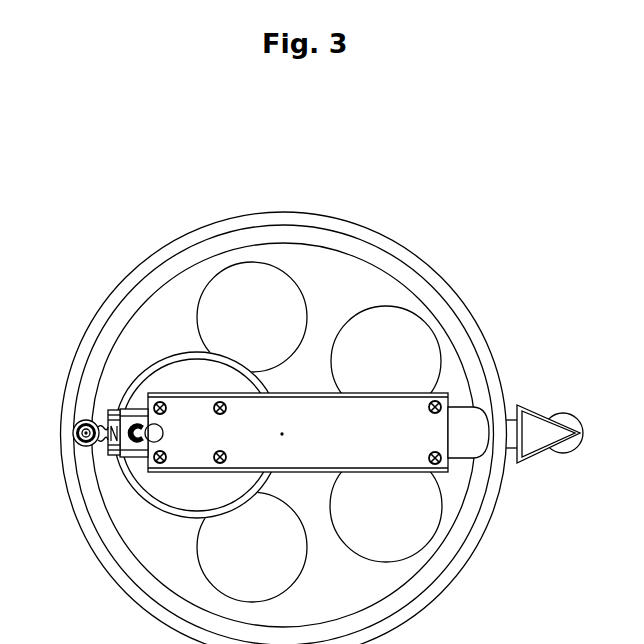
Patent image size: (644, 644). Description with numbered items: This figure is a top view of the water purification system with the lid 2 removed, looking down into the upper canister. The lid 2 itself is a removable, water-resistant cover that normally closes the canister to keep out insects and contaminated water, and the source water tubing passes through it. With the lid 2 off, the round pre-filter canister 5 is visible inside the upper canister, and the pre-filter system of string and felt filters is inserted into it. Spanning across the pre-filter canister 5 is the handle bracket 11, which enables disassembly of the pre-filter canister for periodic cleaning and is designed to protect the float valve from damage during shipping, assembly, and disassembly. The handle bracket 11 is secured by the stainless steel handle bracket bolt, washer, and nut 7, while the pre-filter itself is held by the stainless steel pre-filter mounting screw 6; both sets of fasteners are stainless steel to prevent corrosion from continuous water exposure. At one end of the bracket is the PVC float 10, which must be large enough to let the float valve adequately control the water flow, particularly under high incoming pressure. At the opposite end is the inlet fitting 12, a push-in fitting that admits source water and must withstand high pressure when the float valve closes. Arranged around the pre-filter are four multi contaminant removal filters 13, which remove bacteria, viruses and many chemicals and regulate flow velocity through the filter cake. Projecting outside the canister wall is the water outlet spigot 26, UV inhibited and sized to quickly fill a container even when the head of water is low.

The lid 2 is at (477, 332).
The pre-filter canister 5 is at (265, 380).
The stainless steel pre-filter mounting screw 6 is at (167, 412).
The stainless steel handle bracket bolt, washer, and nut 7 is at (430, 410).
The PVC float 10 is at (458, 452).
The handle bracket 11 is at (327, 451).
The inlet fitting 12 is at (73, 433).
The multi contaminant removal (MCR) filter 13 is at (266, 317).
The water outlet spigot 26 is at (577, 420).